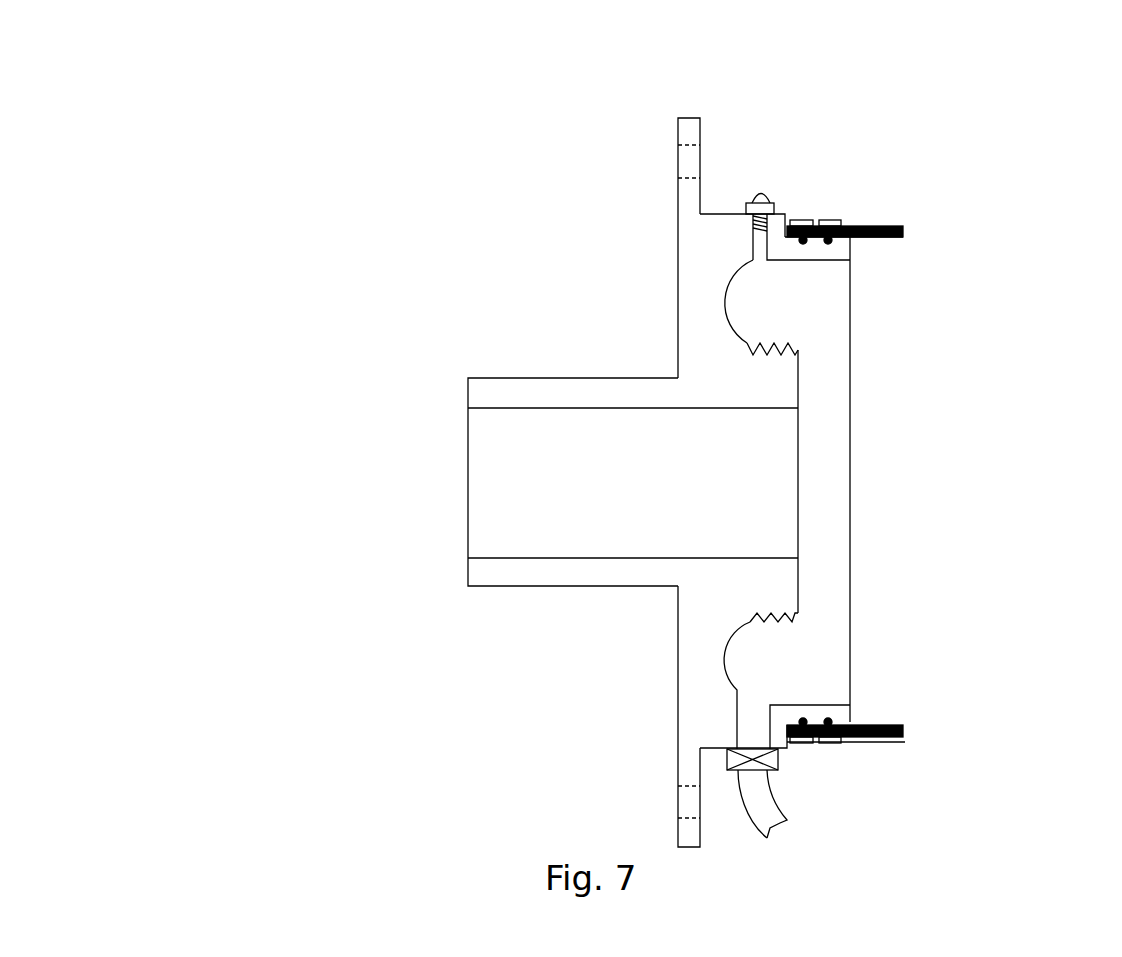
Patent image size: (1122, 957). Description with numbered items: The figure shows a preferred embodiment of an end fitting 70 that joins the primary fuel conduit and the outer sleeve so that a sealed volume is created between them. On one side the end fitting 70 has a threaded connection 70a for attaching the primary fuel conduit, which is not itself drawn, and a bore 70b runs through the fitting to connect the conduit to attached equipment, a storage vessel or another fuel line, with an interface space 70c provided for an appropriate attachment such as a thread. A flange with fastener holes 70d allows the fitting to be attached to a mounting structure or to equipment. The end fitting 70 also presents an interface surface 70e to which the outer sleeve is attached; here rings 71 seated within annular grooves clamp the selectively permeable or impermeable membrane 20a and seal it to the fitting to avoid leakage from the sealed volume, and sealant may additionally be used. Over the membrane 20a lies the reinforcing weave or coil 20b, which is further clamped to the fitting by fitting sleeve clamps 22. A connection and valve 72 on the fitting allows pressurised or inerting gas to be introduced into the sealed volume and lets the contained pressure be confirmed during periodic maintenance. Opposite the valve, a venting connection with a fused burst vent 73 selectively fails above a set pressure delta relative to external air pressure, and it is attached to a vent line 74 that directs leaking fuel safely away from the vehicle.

The end fitting 70 is at (398, 452).
The threaded connection 70a is at (798, 613).
The bore 70b is at (725, 488).
The interface space 70c is at (502, 587).
The fastener holes 70d is at (680, 167).
The interface surface 70e is at (853, 257).
The rings 71 is at (855, 247).
The connection and valve 72 is at (752, 197).
The fused burst vent 73 is at (770, 760).
The vent line 74 is at (757, 802).
The fitting sleeve clamps 22 is at (830, 219).
The selectively permeable or impermeable membrane 20a is at (903, 234).
The reinforcing weave or coil 20b is at (903, 226).